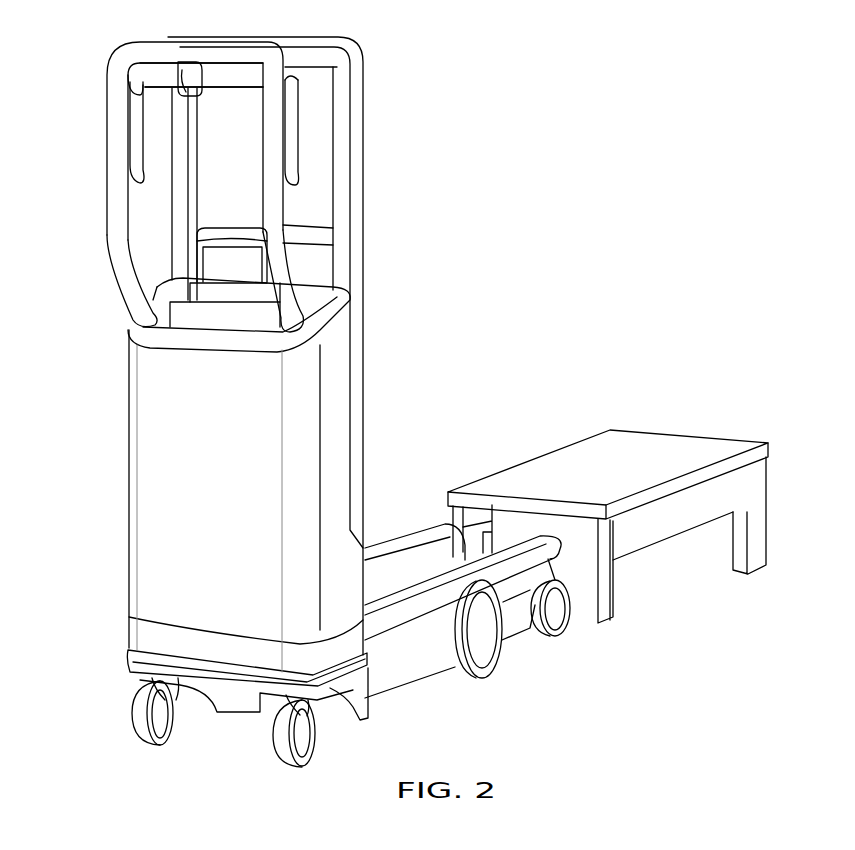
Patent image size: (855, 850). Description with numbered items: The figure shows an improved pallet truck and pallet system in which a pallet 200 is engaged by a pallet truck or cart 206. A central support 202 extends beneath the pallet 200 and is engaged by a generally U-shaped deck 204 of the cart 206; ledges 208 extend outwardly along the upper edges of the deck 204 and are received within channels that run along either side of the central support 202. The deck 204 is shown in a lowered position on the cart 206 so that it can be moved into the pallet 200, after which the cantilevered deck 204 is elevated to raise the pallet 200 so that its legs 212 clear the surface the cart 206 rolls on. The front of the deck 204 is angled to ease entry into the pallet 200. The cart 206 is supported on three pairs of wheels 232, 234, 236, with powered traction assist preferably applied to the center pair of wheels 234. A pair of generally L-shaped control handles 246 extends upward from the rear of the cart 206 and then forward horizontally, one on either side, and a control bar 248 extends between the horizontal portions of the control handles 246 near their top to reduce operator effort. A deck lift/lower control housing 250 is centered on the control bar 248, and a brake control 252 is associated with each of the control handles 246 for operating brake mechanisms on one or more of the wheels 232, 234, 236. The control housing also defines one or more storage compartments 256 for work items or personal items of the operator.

The pallet 200 is at (638, 484).
The central support 202 is at (525, 527).
The U-shaped deck 204 is at (383, 525).
The pallet truck or cart 206 is at (118, 530).
The ledges 208 is at (423, 527).
The legs 212 is at (627, 600).
The wheels 232 is at (125, 747).
The wheels 234 is at (497, 670).
The wheels 236 is at (562, 638).
The L-shaped control handles 246 is at (112, 215).
The control bar 248 is at (243, 70).
The deck lift/lower control housing 250 is at (195, 80).
The brake control 252 is at (133, 130).
The storage compartments 256 is at (230, 268).